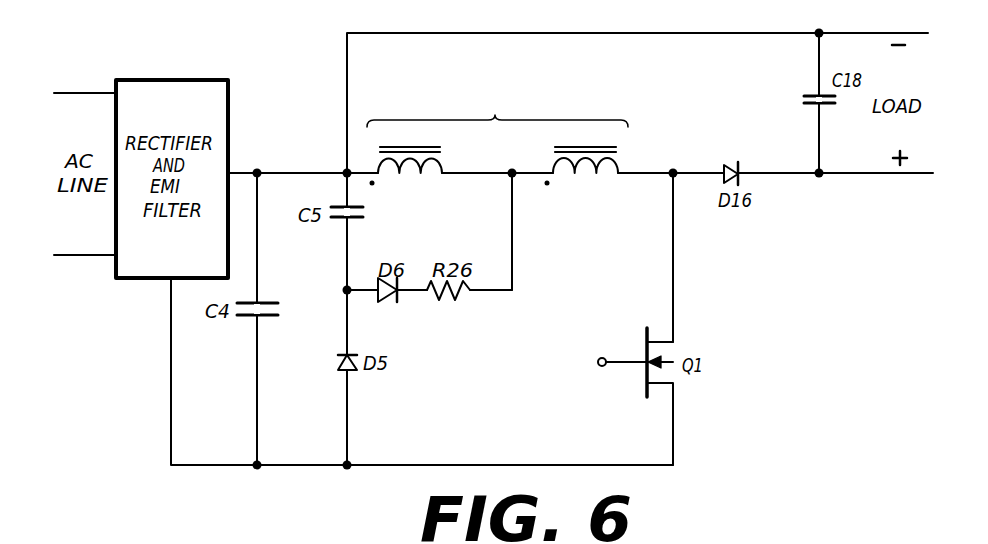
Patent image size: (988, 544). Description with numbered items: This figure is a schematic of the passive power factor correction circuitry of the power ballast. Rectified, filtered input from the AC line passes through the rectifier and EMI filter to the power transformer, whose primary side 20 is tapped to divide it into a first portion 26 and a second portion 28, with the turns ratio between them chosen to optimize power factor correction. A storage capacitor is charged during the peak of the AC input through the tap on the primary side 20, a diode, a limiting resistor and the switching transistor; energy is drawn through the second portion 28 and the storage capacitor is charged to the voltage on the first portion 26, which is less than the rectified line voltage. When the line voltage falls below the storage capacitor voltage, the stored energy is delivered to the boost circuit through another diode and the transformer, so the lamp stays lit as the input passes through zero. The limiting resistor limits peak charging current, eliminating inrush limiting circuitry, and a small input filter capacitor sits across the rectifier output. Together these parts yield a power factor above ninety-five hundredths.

The primary winding side 20 is at (497, 108).
The first portion 26 is at (445, 165).
The second portion 28 is at (620, 165).